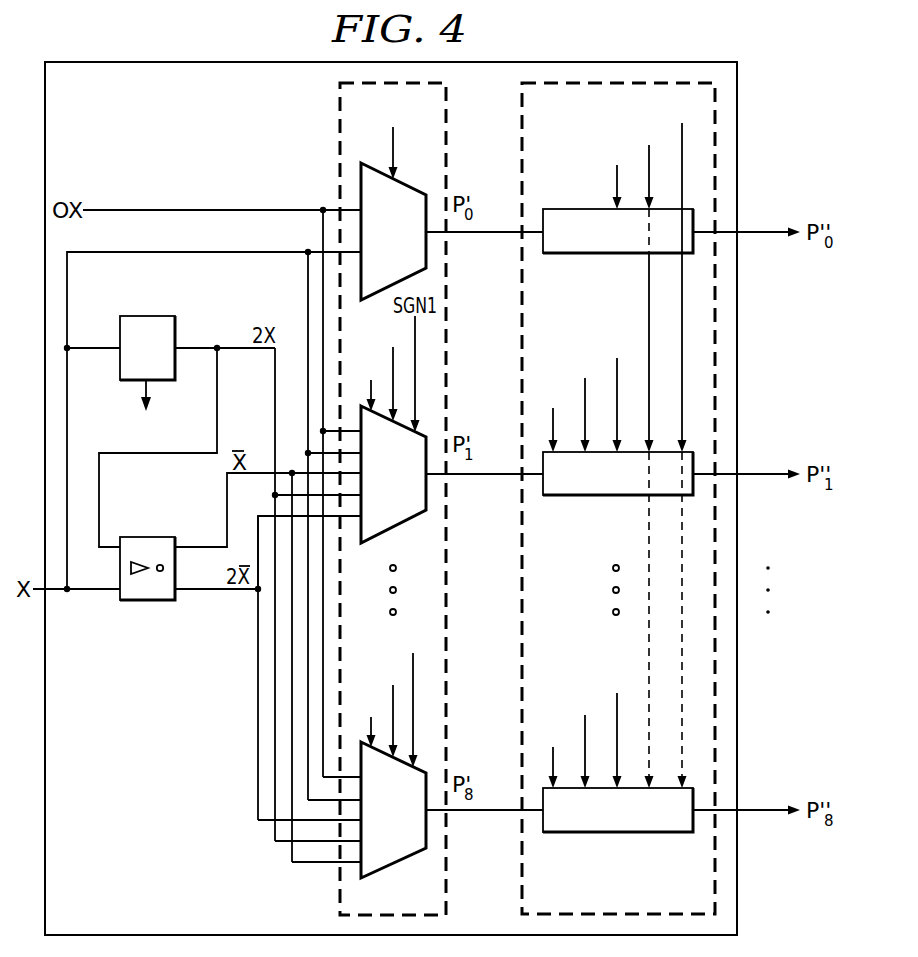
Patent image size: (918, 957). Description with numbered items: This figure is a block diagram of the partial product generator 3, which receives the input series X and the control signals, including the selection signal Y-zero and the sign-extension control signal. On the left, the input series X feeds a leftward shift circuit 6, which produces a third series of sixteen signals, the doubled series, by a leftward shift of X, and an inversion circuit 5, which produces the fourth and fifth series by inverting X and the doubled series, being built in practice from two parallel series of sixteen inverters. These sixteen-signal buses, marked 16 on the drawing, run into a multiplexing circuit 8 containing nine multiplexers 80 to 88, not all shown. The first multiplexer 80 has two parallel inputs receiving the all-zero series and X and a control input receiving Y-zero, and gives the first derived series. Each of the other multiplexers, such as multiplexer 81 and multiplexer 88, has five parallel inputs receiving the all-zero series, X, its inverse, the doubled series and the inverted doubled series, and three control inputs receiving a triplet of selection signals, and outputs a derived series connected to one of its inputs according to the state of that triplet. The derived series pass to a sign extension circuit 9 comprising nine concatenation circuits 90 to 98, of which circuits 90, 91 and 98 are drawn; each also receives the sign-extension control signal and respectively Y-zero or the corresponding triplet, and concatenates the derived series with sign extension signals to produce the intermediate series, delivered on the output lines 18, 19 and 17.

The partial product generator 3 is at (150, 62).
The inversion circuit 5 is at (143, 600).
The leftward shift circuit 6 is at (140, 316).
The multiplexing circuit 8 is at (340, 893).
The sign extension circuit 9 is at (522, 875).
The 16-bit bus 16 is at (129, 199).
The output line P''8 17 is at (775, 799).
The output line P''0 18 is at (775, 220).
The output line P''1 19 is at (775, 463).
The first multiplexer 80 is at (407, 184).
The multiplexer 81 is at (404, 524).
The multiplexer 88 is at (397, 862).
The concatenation circuit 90 is at (570, 209).
The concatenation circuit 91 is at (587, 495).
The concatenation circuit 98 is at (590, 832).